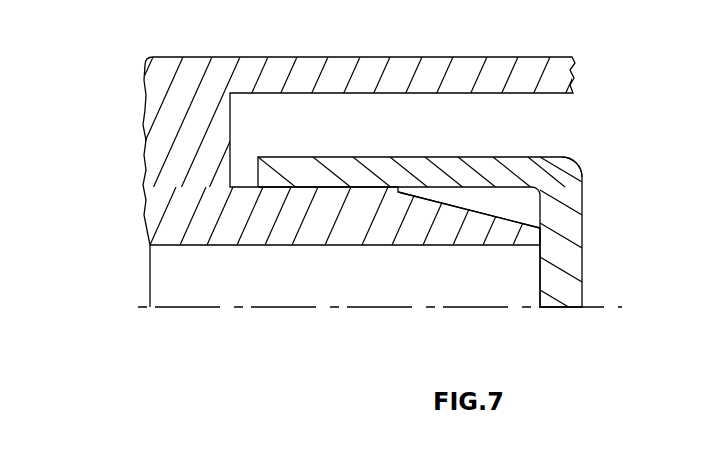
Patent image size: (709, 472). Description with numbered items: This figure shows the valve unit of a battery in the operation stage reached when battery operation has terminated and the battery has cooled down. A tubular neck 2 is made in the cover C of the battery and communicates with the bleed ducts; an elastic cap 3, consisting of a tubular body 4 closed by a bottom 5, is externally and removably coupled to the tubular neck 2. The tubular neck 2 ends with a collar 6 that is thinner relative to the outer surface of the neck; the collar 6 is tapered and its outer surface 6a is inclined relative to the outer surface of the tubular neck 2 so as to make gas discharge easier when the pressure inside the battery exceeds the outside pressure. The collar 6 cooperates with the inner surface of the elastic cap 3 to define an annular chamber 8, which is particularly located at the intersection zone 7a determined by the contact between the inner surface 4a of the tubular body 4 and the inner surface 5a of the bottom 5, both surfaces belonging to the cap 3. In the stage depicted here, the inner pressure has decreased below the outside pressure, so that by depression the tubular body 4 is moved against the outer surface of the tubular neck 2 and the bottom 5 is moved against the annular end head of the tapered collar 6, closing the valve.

The tubular neck 2 is at (292, 227).
The elastic cap 3 is at (615, 106).
The tubular body 4 is at (320, 163).
The inner surface of the tubular body 4a is at (458, 187).
The bottom 5 is at (567, 288).
The inner surface of the bottom 5a is at (540, 256).
The collar 6 is at (381, 283).
The outer surface of the collar 6a is at (465, 212).
The intersection zone 7a is at (540, 192).
The annular chamber 8 is at (510, 212).
The cover C is at (183, 137).